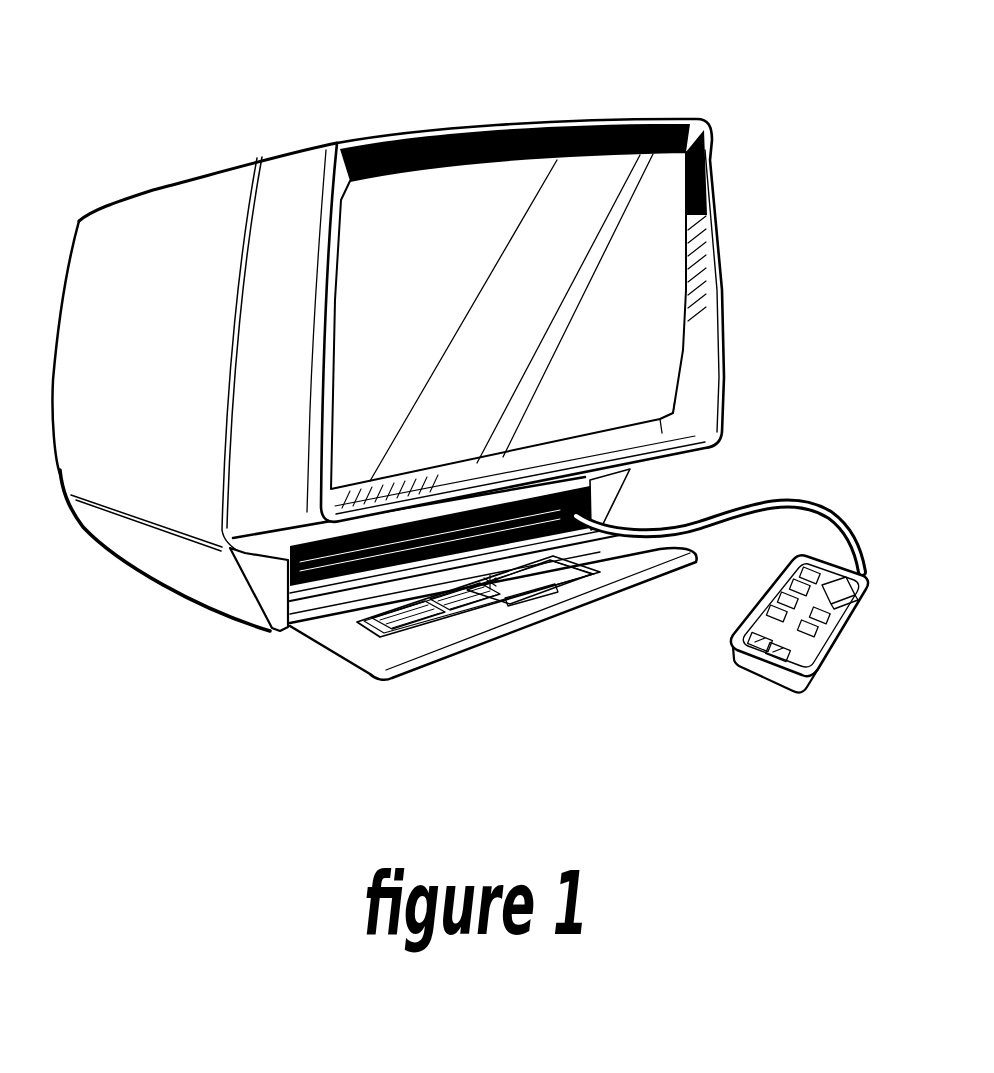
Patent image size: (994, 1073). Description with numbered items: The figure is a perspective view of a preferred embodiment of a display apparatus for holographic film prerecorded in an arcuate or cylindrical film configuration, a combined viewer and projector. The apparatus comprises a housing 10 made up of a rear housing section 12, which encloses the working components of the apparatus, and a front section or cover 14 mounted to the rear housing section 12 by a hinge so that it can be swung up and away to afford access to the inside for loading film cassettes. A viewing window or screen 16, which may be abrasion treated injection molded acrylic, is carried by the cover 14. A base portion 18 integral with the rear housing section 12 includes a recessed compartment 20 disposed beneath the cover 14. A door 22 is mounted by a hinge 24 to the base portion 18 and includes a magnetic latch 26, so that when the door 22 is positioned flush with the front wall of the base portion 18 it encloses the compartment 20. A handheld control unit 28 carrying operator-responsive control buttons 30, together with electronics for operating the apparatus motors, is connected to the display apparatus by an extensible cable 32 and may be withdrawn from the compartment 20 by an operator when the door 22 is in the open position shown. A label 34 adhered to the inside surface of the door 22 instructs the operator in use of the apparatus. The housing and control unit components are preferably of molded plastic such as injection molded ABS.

The housing 10 is at (443, 108).
The rear housing section 12 is at (182, 191).
The front section or cover 14 is at (725, 377).
The viewing window or screen 16 is at (655, 350).
The base portion 18 is at (272, 630).
The recessed compartment 20 is at (618, 488).
The door 22 is at (418, 648).
The hinge 24 is at (330, 608).
The magnetic latch 26 is at (578, 609).
The handheld control unit 28 is at (840, 654).
The control buttons 30 is at (798, 655).
The extensible cable 32 is at (806, 507).
The label 34 is at (470, 614).